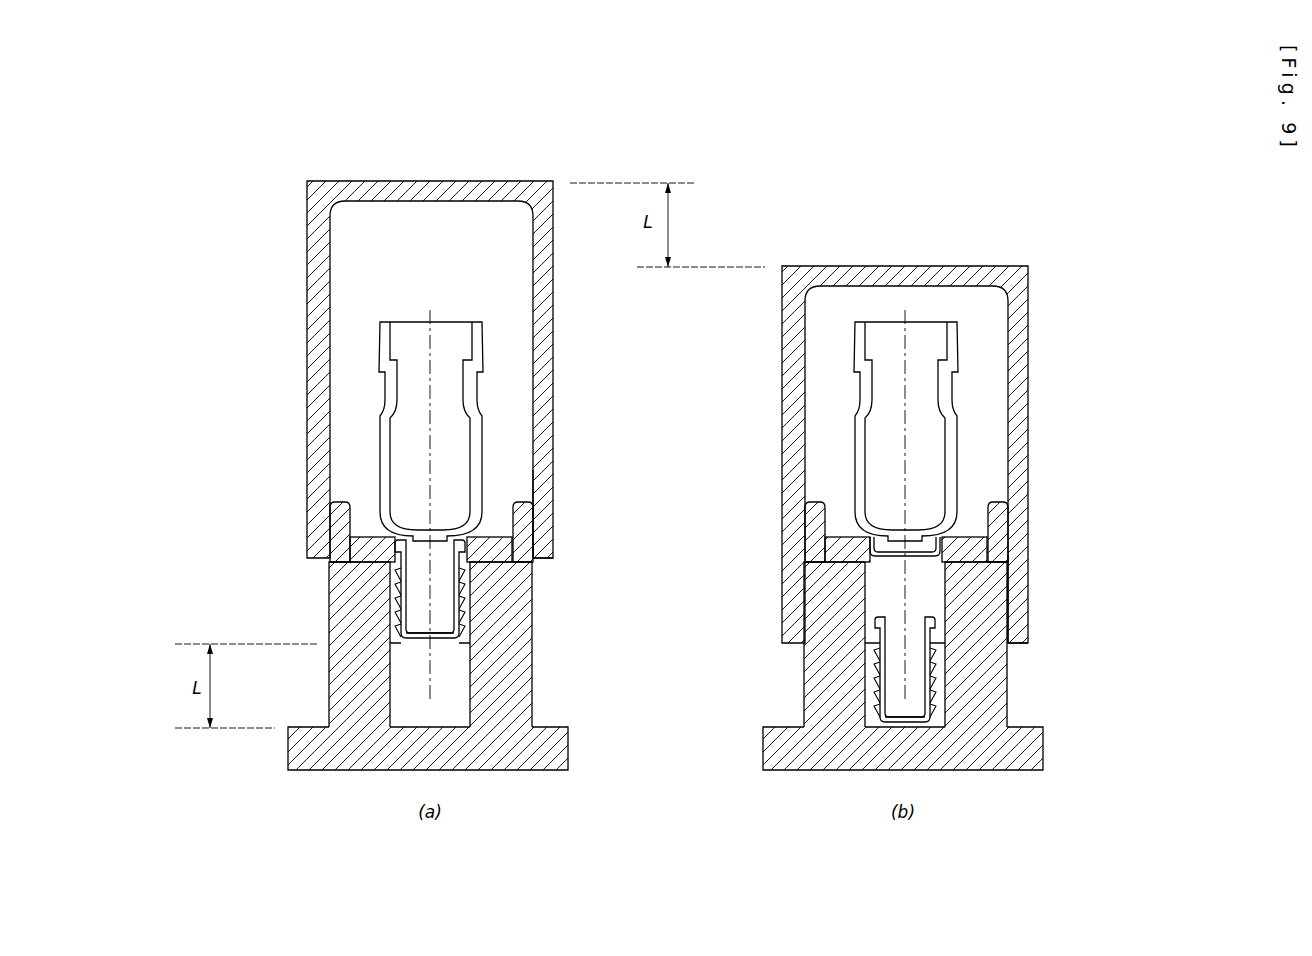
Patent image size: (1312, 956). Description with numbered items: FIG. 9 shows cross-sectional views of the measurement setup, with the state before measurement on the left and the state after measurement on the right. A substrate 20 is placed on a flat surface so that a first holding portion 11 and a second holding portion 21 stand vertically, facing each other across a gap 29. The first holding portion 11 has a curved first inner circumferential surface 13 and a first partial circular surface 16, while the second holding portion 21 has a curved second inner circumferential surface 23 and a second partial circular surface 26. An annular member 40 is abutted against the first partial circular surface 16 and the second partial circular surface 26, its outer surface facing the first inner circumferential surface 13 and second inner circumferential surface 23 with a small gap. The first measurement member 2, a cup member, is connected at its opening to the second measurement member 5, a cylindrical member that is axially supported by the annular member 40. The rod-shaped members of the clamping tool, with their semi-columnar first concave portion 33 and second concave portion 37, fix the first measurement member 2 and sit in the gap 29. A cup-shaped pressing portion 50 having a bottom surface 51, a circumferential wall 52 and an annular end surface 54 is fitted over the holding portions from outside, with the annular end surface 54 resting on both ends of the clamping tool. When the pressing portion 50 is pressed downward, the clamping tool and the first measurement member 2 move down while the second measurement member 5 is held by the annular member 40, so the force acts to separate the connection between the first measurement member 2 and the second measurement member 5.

The first measurement member 2 is at (440, 645).
The second measurement member 5 is at (482, 420).
The first holding portion 11 is at (345, 678).
The first inner circumferential surface 13 is at (330, 519).
The first partial circular surface 16 is at (346, 567).
The substrate 20 is at (566, 752).
The second holding portion 21 is at (510, 697).
The second inner circumferential surface 23 is at (548, 502).
The second partial circular surface 26 is at (512, 570).
The gap 29 is at (667, 651).
The first concave portion 33 is at (664, 631).
The second concave portion 37 is at (462, 625).
The annular member 40 is at (535, 530).
The pressing portion 50 is at (700, 382).
The bottom surface 51 is at (401, 181).
The circumferential wall 52 is at (553, 362).
The annular end surface 54 is at (541, 563).